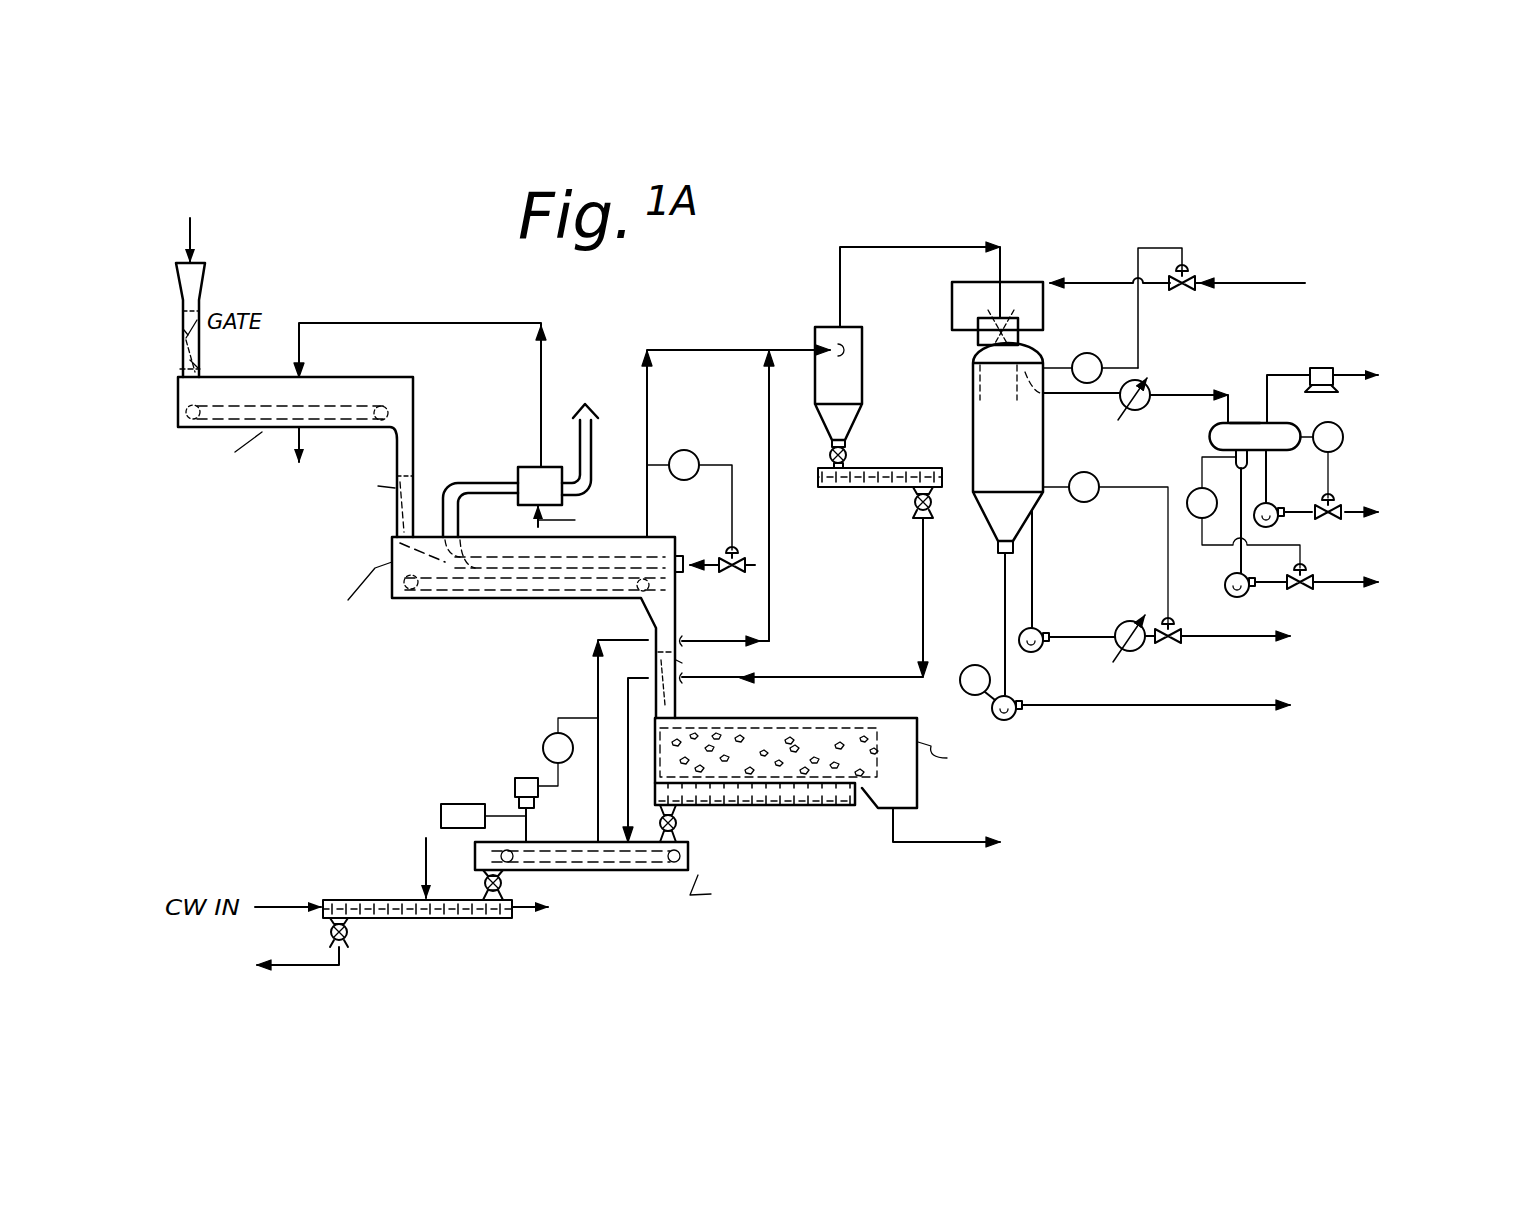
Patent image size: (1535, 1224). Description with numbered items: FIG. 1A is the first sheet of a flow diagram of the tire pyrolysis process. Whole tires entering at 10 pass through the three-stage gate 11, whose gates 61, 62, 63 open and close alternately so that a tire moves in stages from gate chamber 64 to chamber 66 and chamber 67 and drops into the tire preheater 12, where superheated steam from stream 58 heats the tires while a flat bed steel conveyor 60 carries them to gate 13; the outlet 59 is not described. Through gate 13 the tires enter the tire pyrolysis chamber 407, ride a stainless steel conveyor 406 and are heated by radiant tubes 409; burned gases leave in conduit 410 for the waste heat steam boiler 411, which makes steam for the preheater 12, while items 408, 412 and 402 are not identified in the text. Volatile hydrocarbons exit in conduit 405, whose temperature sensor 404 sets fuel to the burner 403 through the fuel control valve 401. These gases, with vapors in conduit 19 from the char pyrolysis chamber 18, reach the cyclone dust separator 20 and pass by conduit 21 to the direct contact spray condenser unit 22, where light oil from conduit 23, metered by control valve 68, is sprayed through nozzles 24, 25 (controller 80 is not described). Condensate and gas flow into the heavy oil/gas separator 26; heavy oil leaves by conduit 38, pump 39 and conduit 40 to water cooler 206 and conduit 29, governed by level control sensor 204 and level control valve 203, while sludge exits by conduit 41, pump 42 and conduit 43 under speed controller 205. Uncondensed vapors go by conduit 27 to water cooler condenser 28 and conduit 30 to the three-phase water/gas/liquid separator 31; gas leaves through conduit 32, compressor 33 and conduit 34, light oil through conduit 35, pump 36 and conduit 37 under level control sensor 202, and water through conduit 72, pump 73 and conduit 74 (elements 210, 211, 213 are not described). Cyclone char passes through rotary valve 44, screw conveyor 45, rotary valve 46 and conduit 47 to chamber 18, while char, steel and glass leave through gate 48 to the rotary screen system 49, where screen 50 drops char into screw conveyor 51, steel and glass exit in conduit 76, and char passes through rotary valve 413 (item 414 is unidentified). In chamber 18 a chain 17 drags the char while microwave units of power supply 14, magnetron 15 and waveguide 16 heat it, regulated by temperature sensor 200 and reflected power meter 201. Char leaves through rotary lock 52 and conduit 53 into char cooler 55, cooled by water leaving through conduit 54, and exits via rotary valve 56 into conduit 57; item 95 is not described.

The tire entry 10 is at (196, 237).
The three-stage gate 11 is at (207, 279).
The gate 61 is at (183, 306).
The gate 62 is at (184, 335).
The gate 63 is at (180, 369).
The gate chamber 64 is at (197, 320).
The chamber 66 is at (197, 350).
The chamber 67 is at (200, 368).
The steam stream 58 is at (428, 323).
The flat bed steel conveyor 60 is at (300, 405).
The tire preheater 12 is at (370, 377).
The steam outlet 59 is at (292, 448).
The gate 13 is at (410, 488).
The conduit 410 is at (487, 483).
The waste heat steam boiler 411 is at (520, 465).
The vent 412 is at (592, 451).
The water inlet 408 is at (536, 520).
The radiant tube 409 is at (392, 546).
The tire pyrolysis chamber 407 is at (478, 600).
The flat bed stainless steel conveyor 406 is at (500, 598).
The conduit 405 is at (650, 378).
The temperature sensor 404 is at (684, 450).
The burner 403 is at (677, 555).
The fuel valve 402 is at (712, 555).
The fuel control valve 401 is at (740, 545).
The conduit 19 is at (772, 598).
The cyclone dust separator 20 is at (864, 366).
The conduit 21 is at (922, 247).
The conduit 23 is at (1087, 283).
The control valve 68 is at (1192, 276).
The spray nozzle 25 is at (990, 317).
The spray nozzle 24 is at (1017, 314).
The direct contact spray condenser unit 22 is at (975, 346).
The temperature controller 80 is at (1088, 353).
The heavy oil/gas separator 26 is at (1045, 451).
The conduit 27 is at (1068, 397).
The water cooler condenser 28 is at (1173, 400).
The conduit 30 is at (1190, 395).
The three-phase water/gas/liquid separator 31 is at (1245, 423).
The conduit 32 is at (1270, 375).
The compressor 33 is at (1318, 368).
The conduit 34 is at (1348, 375).
The level control sensor 202 is at (1345, 437).
The speed controller 205 is at (1338, 500).
The conduit 37 is at (1343, 512).
The conduit 35 is at (1270, 465).
The pump 36 is at (1274, 505).
The level controller 210 is at (1191, 492).
The conduit 72 is at (1235, 563).
The pump 73 is at (1225, 586).
The conduit 74 is at (1268, 596).
The water valve 211 is at (1300, 596).
The water outlet 213 is at (1340, 582).
The level control sensor 204 is at (1086, 503).
The conduit 38 is at (1035, 557).
The pump 39 is at (1040, 628).
The conduit 40 is at (1072, 643).
The water cooler 206 is at (1139, 652).
The level control valve 203 is at (1170, 650).
The conduit 29 is at (1255, 640).
The conduit 41 is at (1003, 575).
The pump 42 is at (1020, 699).
The conduit 43 is at (1188, 707).
The rotary valve 44 is at (848, 456).
The screw conveyor 45 is at (918, 468).
The rotary valve 46 is at (912, 501).
The conduit 47 is at (920, 565).
The gate 48 is at (652, 660).
The rotary screen system 49 is at (870, 718).
The rotary screen 50 is at (770, 737).
The screw conveyor 51 is at (822, 807).
The conduit 76 is at (970, 845).
The rotary valve 413 is at (678, 823).
The char chute 414 is at (682, 831).
The char pyrolysis chamber 18 is at (692, 851).
The high temperature alloy chain 17 is at (590, 870).
The temperature controlling sensor 200 is at (546, 738).
The power supply 14 is at (518, 778).
The magnetron 15 is at (538, 802).
The waveguide 16 is at (536, 826).
The reflected microwave power meter 201 is at (463, 804).
The rotary lock 52 is at (484, 883).
The conduit 53 is at (503, 883).
The inlet 95 is at (423, 858).
The char cooler 55 is at (378, 900).
The conduit 54 is at (526, 918).
The rotary valve 56 is at (350, 935).
The conduit 57 is at (305, 968).